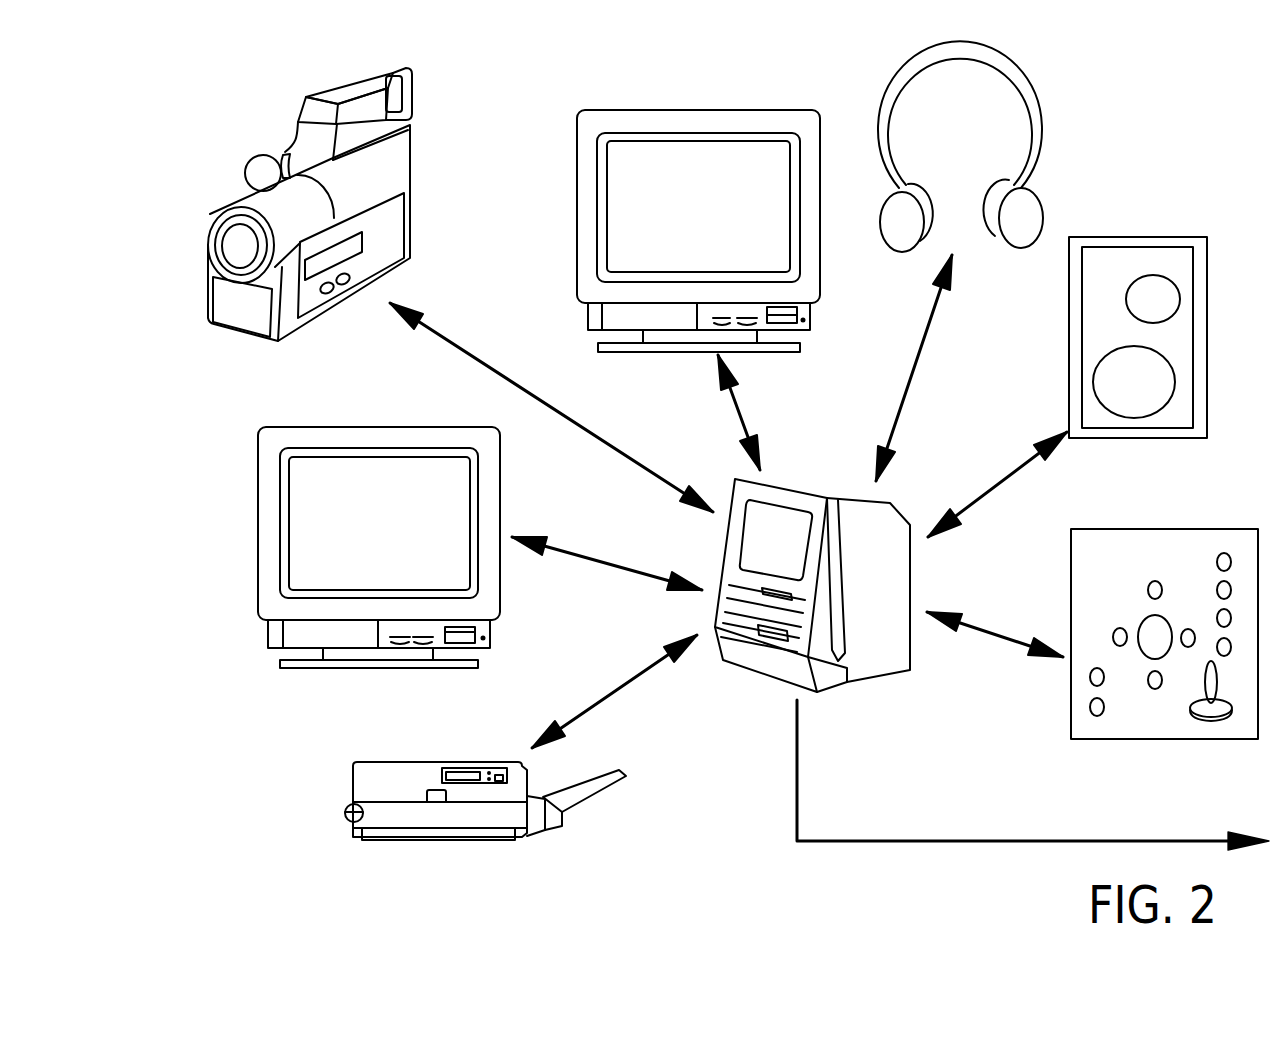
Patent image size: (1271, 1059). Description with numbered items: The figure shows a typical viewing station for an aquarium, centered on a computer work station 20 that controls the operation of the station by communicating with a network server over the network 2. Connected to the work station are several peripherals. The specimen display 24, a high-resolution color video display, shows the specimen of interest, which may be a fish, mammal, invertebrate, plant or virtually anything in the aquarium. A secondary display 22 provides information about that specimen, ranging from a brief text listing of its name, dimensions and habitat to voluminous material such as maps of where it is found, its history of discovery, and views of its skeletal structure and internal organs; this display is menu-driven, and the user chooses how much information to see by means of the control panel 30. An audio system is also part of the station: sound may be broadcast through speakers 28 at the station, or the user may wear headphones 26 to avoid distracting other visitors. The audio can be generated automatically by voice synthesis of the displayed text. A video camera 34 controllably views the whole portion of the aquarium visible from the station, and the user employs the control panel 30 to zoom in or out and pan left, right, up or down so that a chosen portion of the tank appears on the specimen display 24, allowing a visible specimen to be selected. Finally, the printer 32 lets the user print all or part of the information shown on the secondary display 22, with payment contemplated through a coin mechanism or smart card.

The network 2 is at (913, 840).
The computer work station 20 is at (762, 668).
The secondary display 22 is at (364, 668).
The specimen display 24 is at (577, 193).
The headphones 26 is at (1043, 115).
The speakers 28 is at (1069, 356).
The control panel 30 is at (1197, 740).
The printer 32 is at (437, 843).
The video camera 34 is at (347, 303).